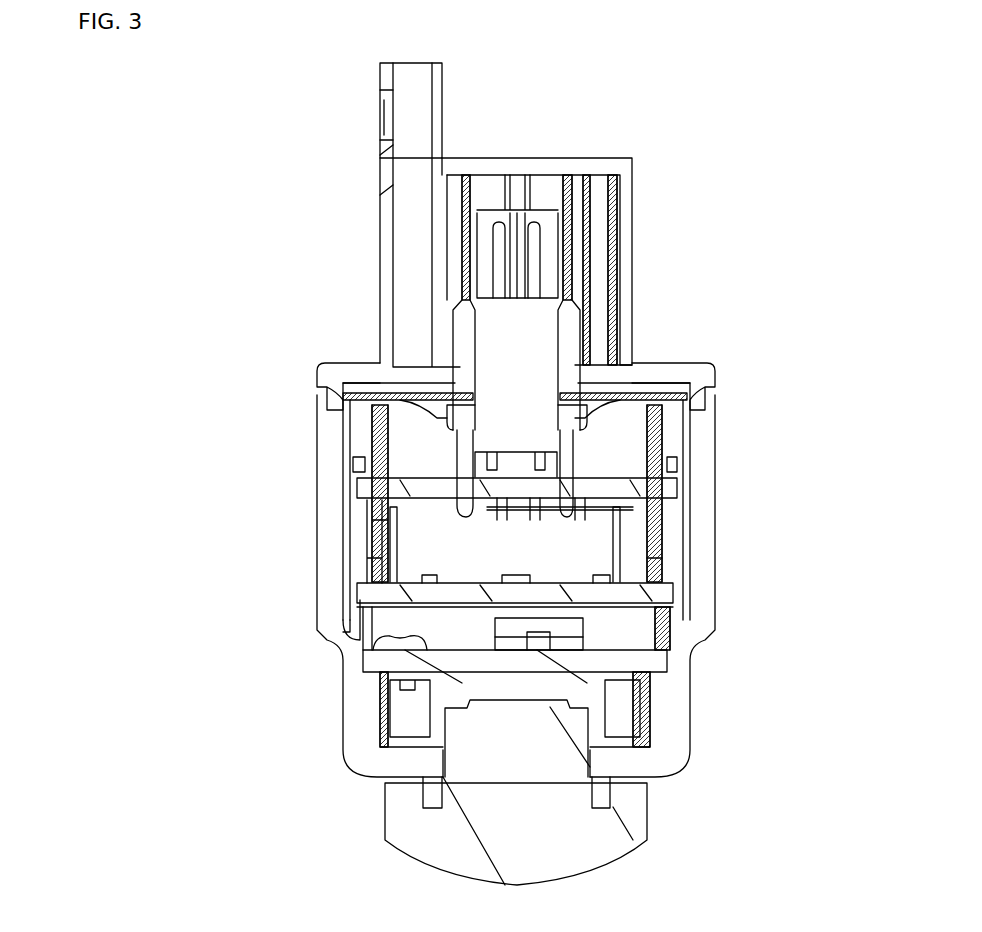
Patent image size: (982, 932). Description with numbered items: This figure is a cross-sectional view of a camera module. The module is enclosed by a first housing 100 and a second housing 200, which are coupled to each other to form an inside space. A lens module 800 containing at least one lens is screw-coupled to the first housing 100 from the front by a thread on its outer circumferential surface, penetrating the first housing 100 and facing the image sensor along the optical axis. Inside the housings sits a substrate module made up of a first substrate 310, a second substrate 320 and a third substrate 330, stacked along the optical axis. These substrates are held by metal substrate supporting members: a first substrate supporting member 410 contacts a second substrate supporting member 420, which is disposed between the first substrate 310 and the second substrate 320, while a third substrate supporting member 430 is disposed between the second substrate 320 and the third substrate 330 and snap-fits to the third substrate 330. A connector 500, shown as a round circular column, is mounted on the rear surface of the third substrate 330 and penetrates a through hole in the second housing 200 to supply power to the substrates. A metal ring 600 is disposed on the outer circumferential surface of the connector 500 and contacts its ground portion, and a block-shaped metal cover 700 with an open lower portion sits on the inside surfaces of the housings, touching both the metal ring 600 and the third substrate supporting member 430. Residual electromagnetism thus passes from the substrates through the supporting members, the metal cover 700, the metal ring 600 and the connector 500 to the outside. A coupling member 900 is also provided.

The first housing 100 is at (317, 495).
The second housing 200 is at (707, 365).
The first substrate 310 is at (632, 660).
The second substrate 320 is at (647, 590).
The third substrate 330 is at (627, 492).
The first substrate supporting member 410 is at (375, 670).
The second substrate supporting member 420 is at (350, 615).
The third substrate supporting member 430 is at (347, 452).
The connector 500 is at (470, 365).
The metal ring 600 is at (607, 417).
The metal cover 700 is at (343, 400).
The lens module 800 is at (593, 845).
The coupling member 900 is at (362, 647).